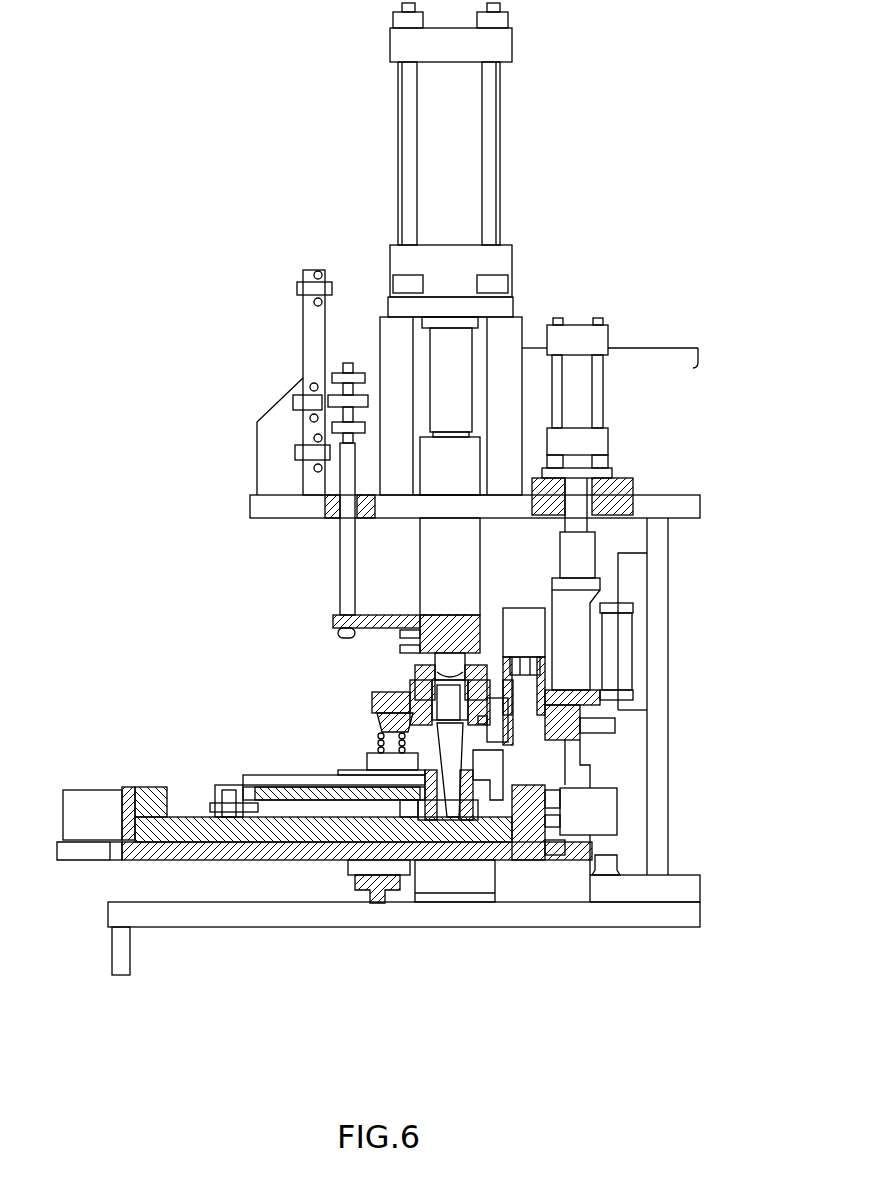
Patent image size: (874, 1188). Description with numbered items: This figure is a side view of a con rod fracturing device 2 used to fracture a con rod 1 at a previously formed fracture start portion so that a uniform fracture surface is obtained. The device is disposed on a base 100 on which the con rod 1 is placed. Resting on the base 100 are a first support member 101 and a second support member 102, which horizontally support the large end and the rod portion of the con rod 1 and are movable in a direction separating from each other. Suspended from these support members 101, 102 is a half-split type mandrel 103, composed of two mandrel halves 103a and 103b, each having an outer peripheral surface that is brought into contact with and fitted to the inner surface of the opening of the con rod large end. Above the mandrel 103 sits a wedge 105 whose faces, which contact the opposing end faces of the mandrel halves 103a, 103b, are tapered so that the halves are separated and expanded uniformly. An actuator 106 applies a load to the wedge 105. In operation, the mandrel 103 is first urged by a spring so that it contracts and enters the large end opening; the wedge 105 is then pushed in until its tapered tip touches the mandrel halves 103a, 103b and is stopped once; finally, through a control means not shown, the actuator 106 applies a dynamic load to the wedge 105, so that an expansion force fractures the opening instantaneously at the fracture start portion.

The con rod fracturing device 2 is at (610, 133).
The con rod 1 is at (278, 772).
The base 100 is at (235, 862).
The first support member 101 is at (303, 838).
The second support member 102 is at (529, 835).
The half-split type mandrel 103 is at (451, 858).
The mandrel half 103a is at (423, 820).
The mandrel half 103b is at (470, 820).
The wedge 105 is at (380, 720).
The actuator 106 is at (420, 572).